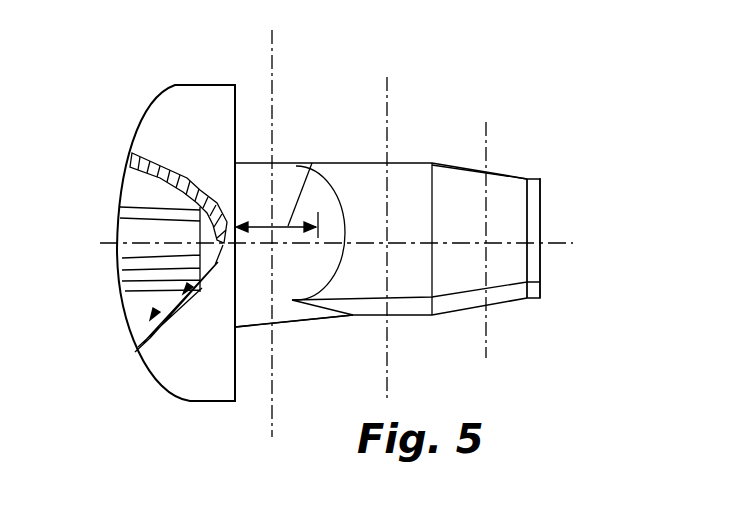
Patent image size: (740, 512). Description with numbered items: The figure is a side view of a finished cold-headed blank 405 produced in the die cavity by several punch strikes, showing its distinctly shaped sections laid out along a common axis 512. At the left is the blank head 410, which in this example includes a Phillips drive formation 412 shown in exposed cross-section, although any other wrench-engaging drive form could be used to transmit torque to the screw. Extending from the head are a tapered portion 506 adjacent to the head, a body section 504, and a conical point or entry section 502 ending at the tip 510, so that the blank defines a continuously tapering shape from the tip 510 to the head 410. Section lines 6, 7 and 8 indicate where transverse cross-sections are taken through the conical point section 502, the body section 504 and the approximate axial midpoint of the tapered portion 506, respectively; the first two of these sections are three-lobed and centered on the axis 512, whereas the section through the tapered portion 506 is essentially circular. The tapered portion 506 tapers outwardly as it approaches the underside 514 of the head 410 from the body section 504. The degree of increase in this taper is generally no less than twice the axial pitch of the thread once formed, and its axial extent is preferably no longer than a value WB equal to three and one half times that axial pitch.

The finished blank 405 is at (308, 347).
The blank head 410 is at (182, 120).
The Phillips drive formation 412 is at (128, 207).
The conical point section 502 is at (473, 197).
The body section 504 is at (360, 165).
The tapered portion 506 is at (285, 177).
The tip 510 is at (533, 218).
The axis 512 is at (558, 243).
The underside of the head 514 is at (240, 117).
The axial length of tapered portion WB is at (311, 165).
The section line 6 is at (440, 358).
The section line 7 is at (342, 398).
The section line 8 is at (215, 437).